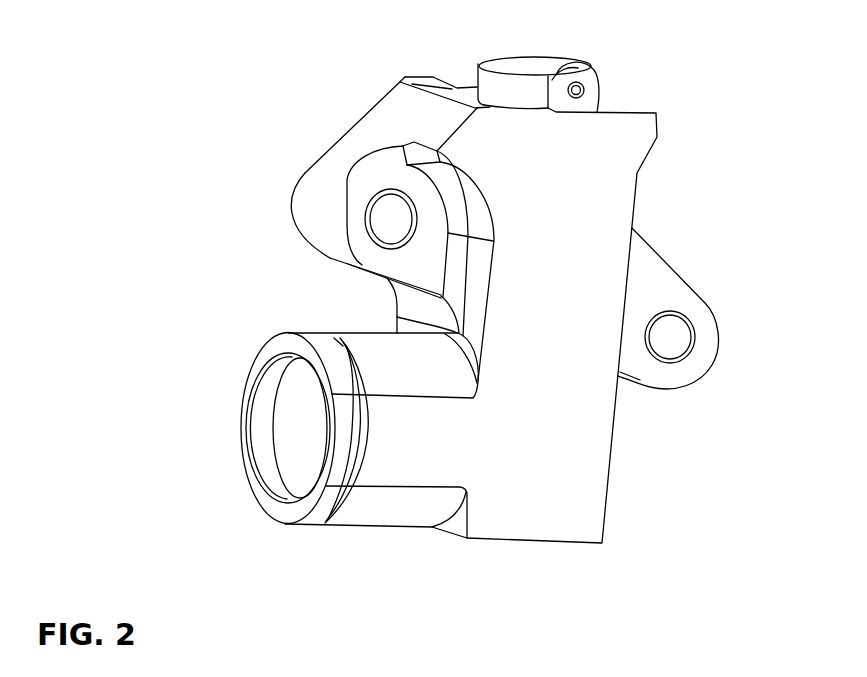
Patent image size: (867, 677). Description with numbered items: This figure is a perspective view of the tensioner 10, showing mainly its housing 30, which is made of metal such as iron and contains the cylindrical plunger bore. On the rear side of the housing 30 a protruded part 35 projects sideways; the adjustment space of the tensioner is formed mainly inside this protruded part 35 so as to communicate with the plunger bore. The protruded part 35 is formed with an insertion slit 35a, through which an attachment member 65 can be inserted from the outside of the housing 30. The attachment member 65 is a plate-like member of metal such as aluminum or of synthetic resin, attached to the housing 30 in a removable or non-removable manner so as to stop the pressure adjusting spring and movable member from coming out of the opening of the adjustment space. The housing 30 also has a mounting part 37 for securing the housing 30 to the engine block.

The bracket assembly 10 is at (331, 87).
The housing 30 is at (583, 452).
The mounting part 37 is at (360, 204).
The protruded part 35 is at (417, 462).
The insertion slit 35a is at (354, 492).
The attachment member 65 is at (293, 430).